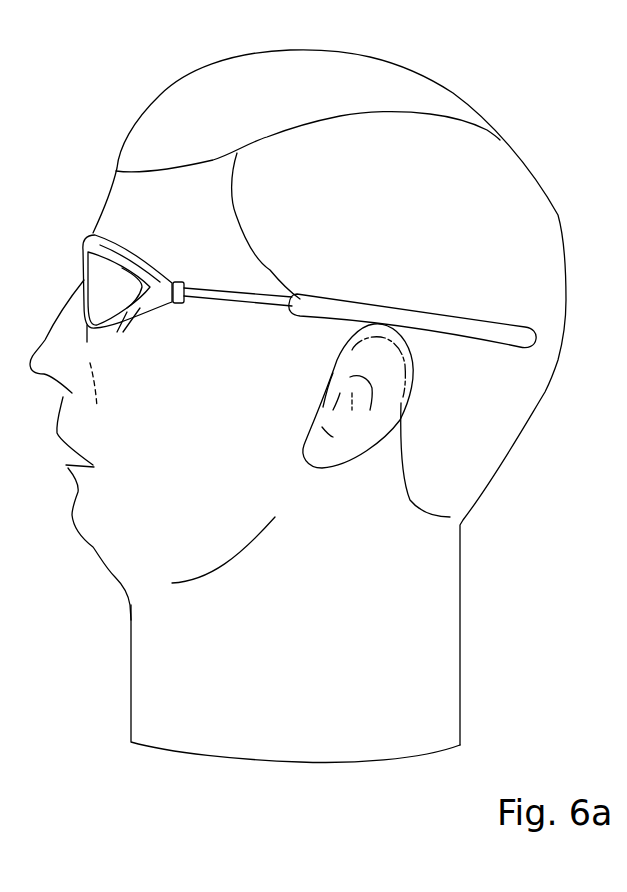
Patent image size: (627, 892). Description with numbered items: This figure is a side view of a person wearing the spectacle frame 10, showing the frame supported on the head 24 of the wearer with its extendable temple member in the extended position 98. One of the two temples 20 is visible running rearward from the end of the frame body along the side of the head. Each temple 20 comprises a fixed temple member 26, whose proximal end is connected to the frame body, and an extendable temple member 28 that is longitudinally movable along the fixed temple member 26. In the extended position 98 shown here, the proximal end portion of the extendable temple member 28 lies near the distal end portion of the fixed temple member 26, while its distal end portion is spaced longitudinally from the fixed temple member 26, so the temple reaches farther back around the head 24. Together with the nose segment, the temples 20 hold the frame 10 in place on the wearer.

The spectacle frame 10 is at (267, 332).
The temple 20 is at (302, 255).
The head 24 is at (457, 93).
The fixed temple member 26 is at (207, 290).
The extendable temple member 28 is at (494, 323).
The extended position 98 is at (390, 285).